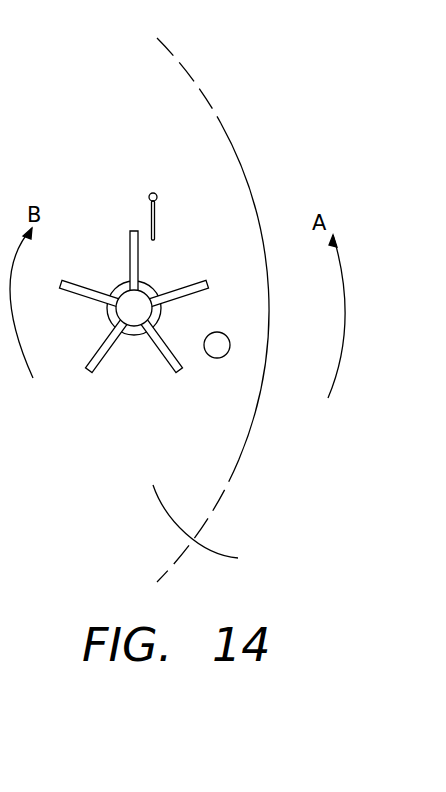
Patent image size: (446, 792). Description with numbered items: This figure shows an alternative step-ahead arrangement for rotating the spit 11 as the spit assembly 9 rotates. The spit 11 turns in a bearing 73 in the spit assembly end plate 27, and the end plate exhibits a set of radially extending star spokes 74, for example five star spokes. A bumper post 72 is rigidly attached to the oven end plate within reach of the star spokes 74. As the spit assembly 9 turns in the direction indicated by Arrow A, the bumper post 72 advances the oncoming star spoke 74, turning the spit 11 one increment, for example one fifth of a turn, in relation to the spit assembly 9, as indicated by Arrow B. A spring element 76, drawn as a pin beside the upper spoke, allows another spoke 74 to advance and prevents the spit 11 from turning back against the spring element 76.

The spit assembly 9 is at (245, 82).
The spit 11 is at (124, 327).
The end plate 27 is at (214, 528).
The bumper post 72 is at (215, 350).
The bearing 73 is at (108, 319).
The star spokes 74 is at (76, 288).
The spring element 76 is at (152, 218).